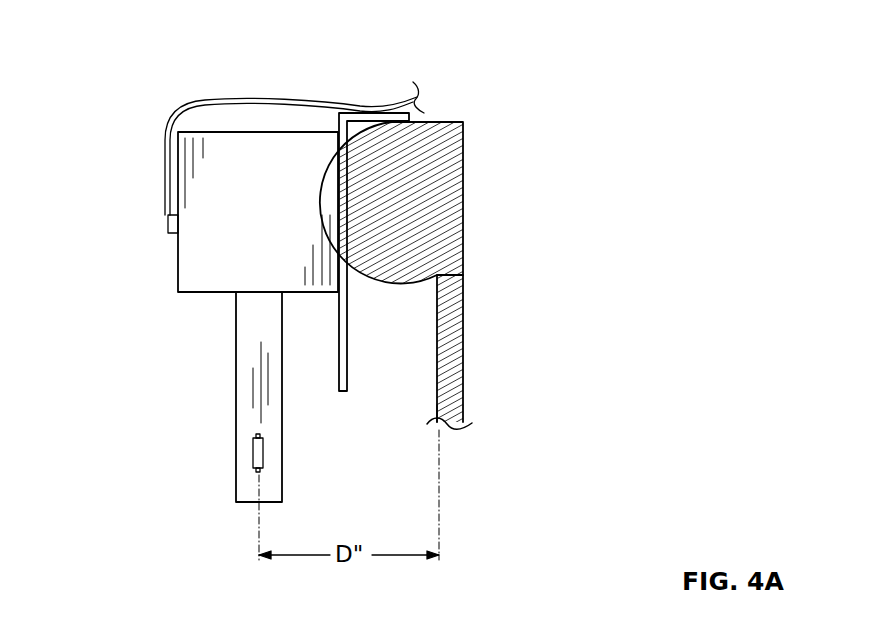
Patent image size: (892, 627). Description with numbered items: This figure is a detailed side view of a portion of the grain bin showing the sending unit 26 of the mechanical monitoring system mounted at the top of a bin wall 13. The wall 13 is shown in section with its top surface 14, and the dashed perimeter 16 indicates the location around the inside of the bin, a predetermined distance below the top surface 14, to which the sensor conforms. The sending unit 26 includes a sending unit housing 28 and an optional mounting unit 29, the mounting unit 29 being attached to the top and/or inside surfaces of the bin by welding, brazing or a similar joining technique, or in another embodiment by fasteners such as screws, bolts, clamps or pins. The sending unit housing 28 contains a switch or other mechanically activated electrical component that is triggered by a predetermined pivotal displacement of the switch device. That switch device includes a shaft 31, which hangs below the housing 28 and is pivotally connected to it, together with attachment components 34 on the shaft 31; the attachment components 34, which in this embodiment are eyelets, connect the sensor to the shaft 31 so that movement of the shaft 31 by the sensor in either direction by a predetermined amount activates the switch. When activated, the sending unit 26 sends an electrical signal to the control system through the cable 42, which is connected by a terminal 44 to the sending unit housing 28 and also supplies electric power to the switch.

The sending unit 26 is at (135, 64).
The cable 42 is at (305, 100).
The top surface 14 is at (448, 122).
The terminal 44 is at (168, 230).
The sending unit housing 28 is at (177, 274).
The mounting unit 29 is at (349, 336).
The wall 13 is at (465, 350).
The shaft 31 is at (236, 397).
The attachment components 34 is at (265, 455).
The perimeter 16 is at (437, 409).